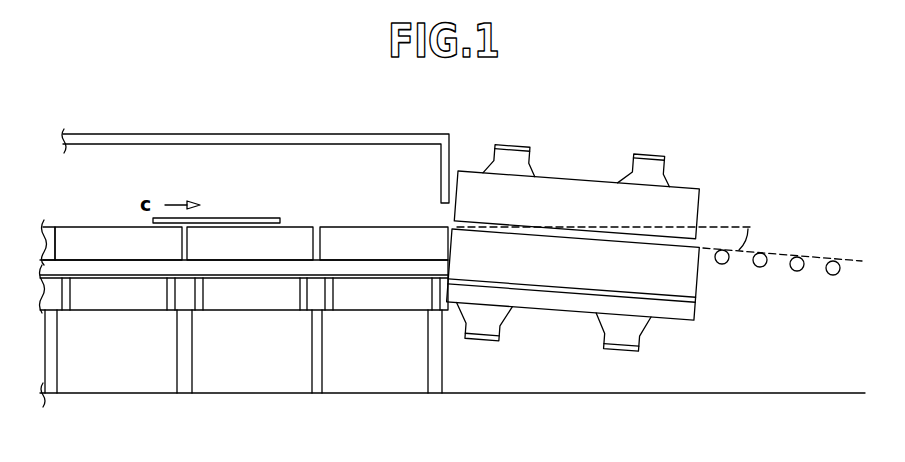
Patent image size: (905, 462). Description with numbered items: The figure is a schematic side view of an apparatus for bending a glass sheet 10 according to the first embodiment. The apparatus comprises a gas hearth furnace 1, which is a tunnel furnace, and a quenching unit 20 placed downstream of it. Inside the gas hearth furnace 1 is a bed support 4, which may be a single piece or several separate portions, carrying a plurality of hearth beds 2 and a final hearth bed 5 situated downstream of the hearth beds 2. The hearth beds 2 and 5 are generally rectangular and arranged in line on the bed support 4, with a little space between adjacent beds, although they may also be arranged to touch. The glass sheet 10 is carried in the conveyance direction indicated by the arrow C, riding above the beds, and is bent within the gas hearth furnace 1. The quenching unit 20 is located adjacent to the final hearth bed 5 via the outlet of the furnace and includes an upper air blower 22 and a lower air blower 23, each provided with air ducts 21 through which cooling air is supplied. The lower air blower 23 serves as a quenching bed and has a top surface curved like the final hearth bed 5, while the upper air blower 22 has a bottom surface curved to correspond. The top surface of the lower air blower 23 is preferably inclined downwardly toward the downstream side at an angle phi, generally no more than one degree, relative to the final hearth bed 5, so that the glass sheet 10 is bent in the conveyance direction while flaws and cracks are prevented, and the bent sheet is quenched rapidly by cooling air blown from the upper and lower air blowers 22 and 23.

The gas hearth furnace 1 is at (225, 124).
The hearth beds 2 is at (137, 250).
The bed support 4 is at (403, 268).
The final hearth bed 5 is at (407, 240).
The glass sheet 10 is at (228, 217).
The quenching unit 20 is at (684, 141).
The air ducts 21 is at (528, 168).
The upper air blower 22 is at (676, 210).
The lower air blower 23 is at (668, 273).